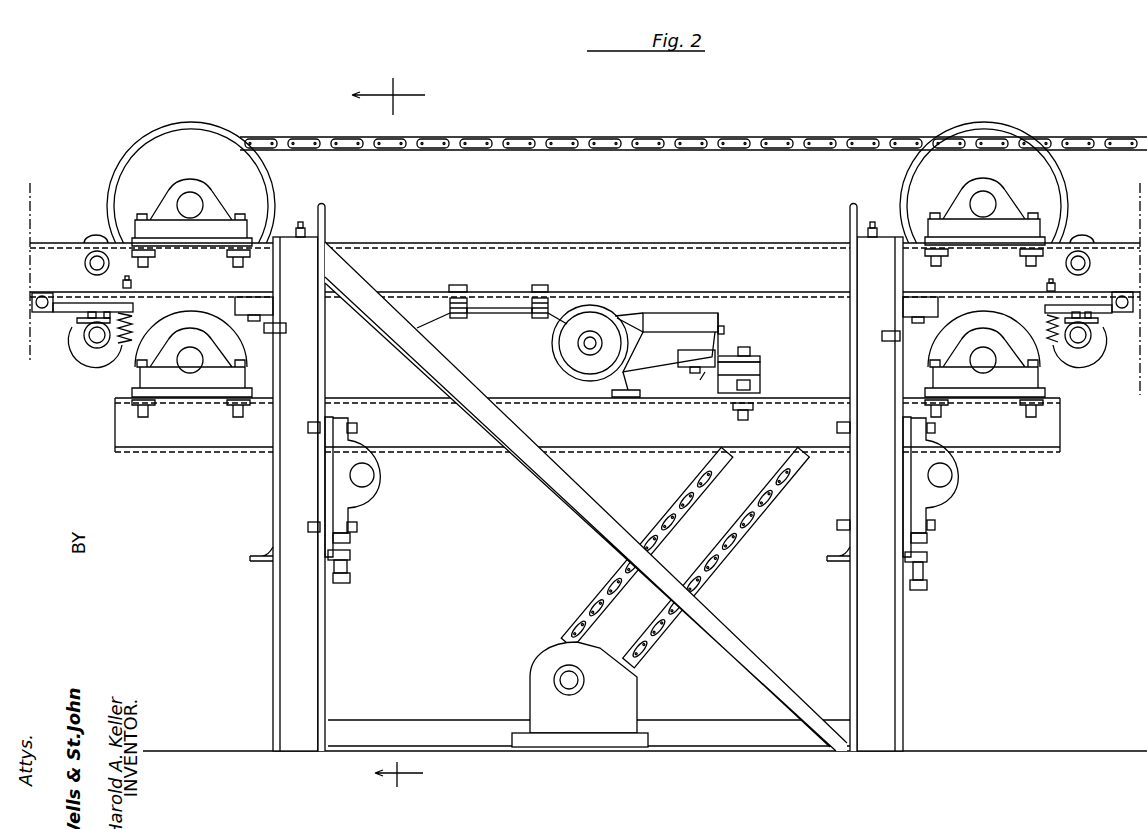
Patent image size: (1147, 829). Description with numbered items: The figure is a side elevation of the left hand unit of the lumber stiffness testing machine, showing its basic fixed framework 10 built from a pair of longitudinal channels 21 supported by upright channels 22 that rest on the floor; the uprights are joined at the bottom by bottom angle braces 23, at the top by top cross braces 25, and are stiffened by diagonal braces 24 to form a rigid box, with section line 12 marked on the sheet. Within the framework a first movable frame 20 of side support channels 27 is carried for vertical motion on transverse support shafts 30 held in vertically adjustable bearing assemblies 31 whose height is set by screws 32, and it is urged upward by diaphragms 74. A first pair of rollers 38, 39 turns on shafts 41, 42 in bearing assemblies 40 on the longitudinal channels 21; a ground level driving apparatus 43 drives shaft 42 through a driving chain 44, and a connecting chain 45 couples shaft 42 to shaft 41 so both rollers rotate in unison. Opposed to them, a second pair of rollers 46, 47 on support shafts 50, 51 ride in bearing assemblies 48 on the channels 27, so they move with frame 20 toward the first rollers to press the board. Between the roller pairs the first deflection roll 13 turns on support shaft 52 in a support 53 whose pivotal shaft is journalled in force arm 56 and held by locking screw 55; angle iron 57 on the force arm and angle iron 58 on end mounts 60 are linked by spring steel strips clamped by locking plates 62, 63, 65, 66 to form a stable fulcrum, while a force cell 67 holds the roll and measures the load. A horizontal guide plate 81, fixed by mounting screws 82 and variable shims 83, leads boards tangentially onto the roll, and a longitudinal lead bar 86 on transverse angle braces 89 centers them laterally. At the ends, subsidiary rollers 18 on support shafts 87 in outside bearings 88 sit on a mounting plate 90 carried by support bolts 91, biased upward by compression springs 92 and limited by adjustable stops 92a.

The framework 10 is at (353, 236).
The section line indicator 12 is at (388, 431).
The first deflection roll 13 is at (545, 350).
The subsidiary rollers 18 is at (98, 242).
The first movable frame 20 is at (199, 458).
The longitudinal channels 21 is at (507, 279).
The upright channels 22 is at (287, 276).
The bottom angle braces 23 is at (378, 729).
The diagonal braces 24 is at (566, 498).
The top cross braces 25 is at (330, 206).
The side support channels 27 is at (409, 440).
The transverse support shafts 30 is at (376, 476).
The vertically adjustable bearing assemblies 31 is at (381, 496).
The screws 32 is at (351, 577).
The roller 38 is at (190, 126).
The roller 39 is at (975, 126).
The bearing assemblies 40 is at (139, 232).
The shaft 41 is at (196, 198).
The shaft 42 is at (978, 196).
The driving apparatus 43 is at (546, 655).
The driving chain 44 is at (606, 592).
The connecting chain 45 is at (624, 139).
The roller 46 is at (141, 363).
The roller 47 is at (1037, 362).
The bearing assemblies 48 is at (199, 389).
The support shaft 50 is at (187, 367).
The support shaft 51 is at (980, 367).
The support shaft 52 is at (592, 337).
The support 53 is at (622, 314).
The locking screw 55 is at (724, 331).
The force arm 56 is at (718, 315).
The transverse angle iron 57 is at (690, 358).
The transverse angle iron 58 is at (760, 364).
The angular end mounts 60 is at (752, 381).
The locking plate 62 is at (743, 341).
The locking plate 63 is at (702, 392).
The locking plate 65 is at (757, 357).
The locking plate 66 is at (705, 372).
The force cell 67 is at (610, 396).
The diaphragms 74 is at (256, 556).
The horizontal guide plate 81 is at (504, 311).
The mounting screws 82 is at (460, 284).
The variable shims 83 is at (467, 309).
The longitudinal lead bar 86 is at (183, 297).
The support shafts 87 is at (85, 263).
The outside bearings 88 is at (89, 272).
The transverse angle braces 89 is at (283, 326).
The mounting plate 90 is at (133, 309).
The support bolts 91 is at (131, 284).
The compression springs 92 is at (134, 334).
The adjustable stops 92a is at (88, 316).